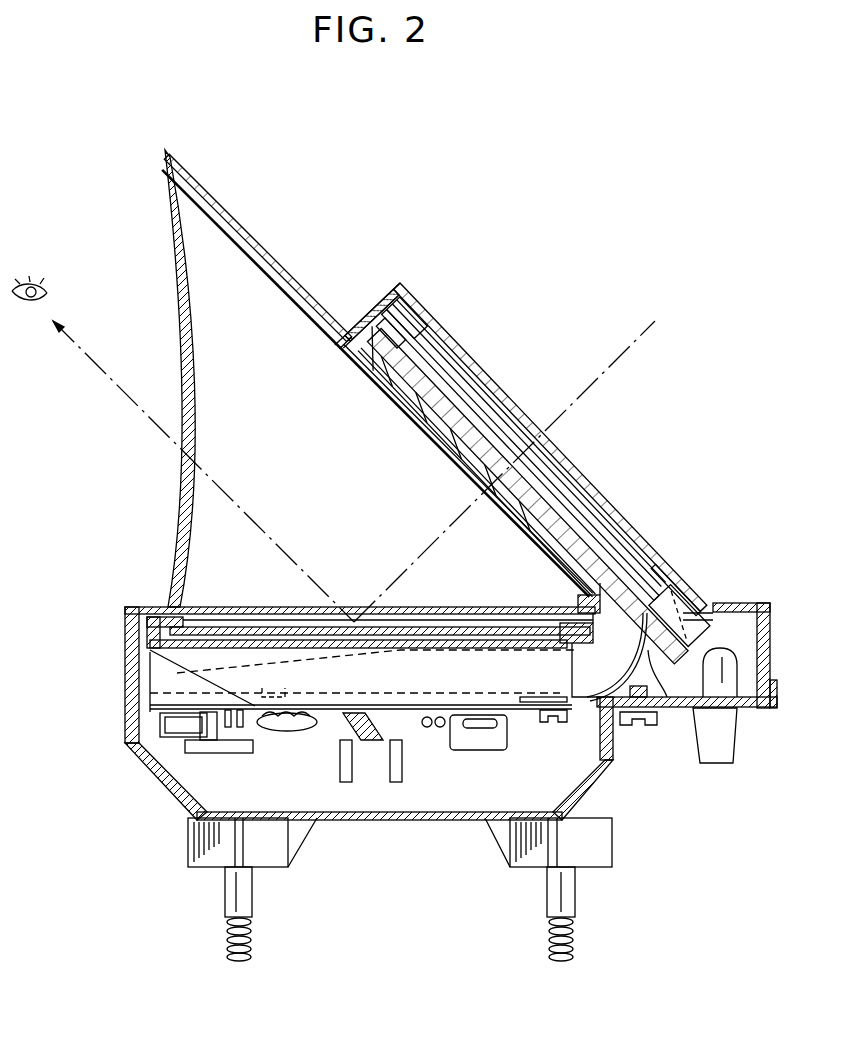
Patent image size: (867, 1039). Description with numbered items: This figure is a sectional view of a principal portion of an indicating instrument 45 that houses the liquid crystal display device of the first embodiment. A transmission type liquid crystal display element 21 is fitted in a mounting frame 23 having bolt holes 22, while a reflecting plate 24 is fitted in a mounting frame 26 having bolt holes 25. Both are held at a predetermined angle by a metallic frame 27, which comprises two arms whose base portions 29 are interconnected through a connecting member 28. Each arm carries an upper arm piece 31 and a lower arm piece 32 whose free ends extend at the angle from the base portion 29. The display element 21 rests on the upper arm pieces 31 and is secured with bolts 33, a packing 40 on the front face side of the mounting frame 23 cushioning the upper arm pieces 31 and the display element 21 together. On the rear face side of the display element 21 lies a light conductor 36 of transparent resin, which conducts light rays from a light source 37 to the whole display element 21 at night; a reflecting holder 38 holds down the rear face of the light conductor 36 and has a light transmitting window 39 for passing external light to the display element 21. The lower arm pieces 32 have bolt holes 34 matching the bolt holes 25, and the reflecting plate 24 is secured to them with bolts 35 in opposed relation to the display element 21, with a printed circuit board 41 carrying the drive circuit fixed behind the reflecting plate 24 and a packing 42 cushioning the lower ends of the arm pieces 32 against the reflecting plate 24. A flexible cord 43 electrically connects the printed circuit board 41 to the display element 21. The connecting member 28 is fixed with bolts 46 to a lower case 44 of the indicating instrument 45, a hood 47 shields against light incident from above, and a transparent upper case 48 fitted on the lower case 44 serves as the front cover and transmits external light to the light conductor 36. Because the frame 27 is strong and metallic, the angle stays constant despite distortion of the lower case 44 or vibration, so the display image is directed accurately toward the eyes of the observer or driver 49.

The transmission type liquid crystal display element 21 is at (465, 397).
The bolt holes 22 is at (365, 320).
The mounting frame 23 is at (408, 375).
The reflecting plate 24 is at (237, 622).
The bolt holes 25 is at (540, 703).
The mounting frame 26 is at (327, 712).
The metallic frame 27 is at (673, 592).
The connecting member 28 is at (624, 726).
The base portions 29 is at (707, 738).
The upper arm piece 31 is at (440, 445).
The lower arm piece 32 is at (367, 712).
The bolts 33 is at (737, 603).
The bolt holes 34 is at (500, 738).
The bolts 35 is at (560, 724).
The light conductor 36 is at (590, 520).
The light source 37 is at (737, 718).
The holder 38 is at (590, 532).
The light transmitting window 39 is at (653, 563).
The packing 40 is at (567, 594).
The printed circuit board 41 is at (414, 713).
The packing 42 is at (145, 607).
The flexible cord 43 is at (677, 676).
The lower case 44 is at (153, 783).
The indicating instrument 45 is at (344, 258).
The bolts 46 is at (652, 712).
The hood 47 is at (238, 223).
The upper case 48 is at (514, 402).
The observer or driver 49 is at (38, 300).